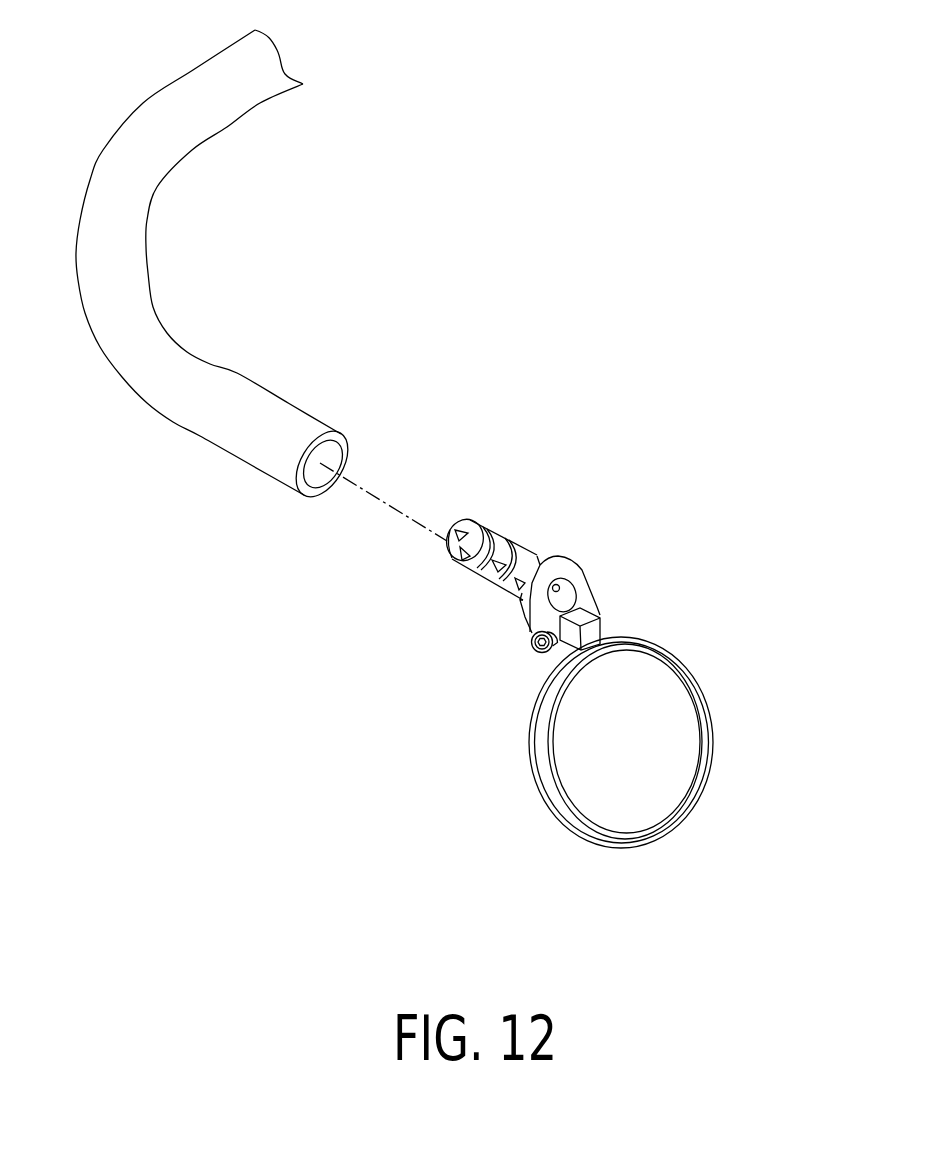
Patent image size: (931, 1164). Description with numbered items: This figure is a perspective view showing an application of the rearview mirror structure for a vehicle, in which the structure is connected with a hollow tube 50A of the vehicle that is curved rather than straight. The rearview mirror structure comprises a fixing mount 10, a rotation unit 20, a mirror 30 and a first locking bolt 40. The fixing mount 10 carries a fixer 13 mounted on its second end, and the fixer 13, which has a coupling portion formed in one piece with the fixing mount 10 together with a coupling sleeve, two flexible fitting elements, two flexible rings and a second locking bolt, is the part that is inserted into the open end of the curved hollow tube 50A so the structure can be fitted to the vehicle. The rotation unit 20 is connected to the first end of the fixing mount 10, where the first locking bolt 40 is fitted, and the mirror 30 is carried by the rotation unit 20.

The hollow tube 50A is at (240, 368).
The fixer 13 is at (510, 530).
The fixing mount 10 is at (592, 568).
The rotation unit 20 is at (595, 619).
The first locking bolt 40 is at (524, 655).
The mirror 30 is at (709, 675).